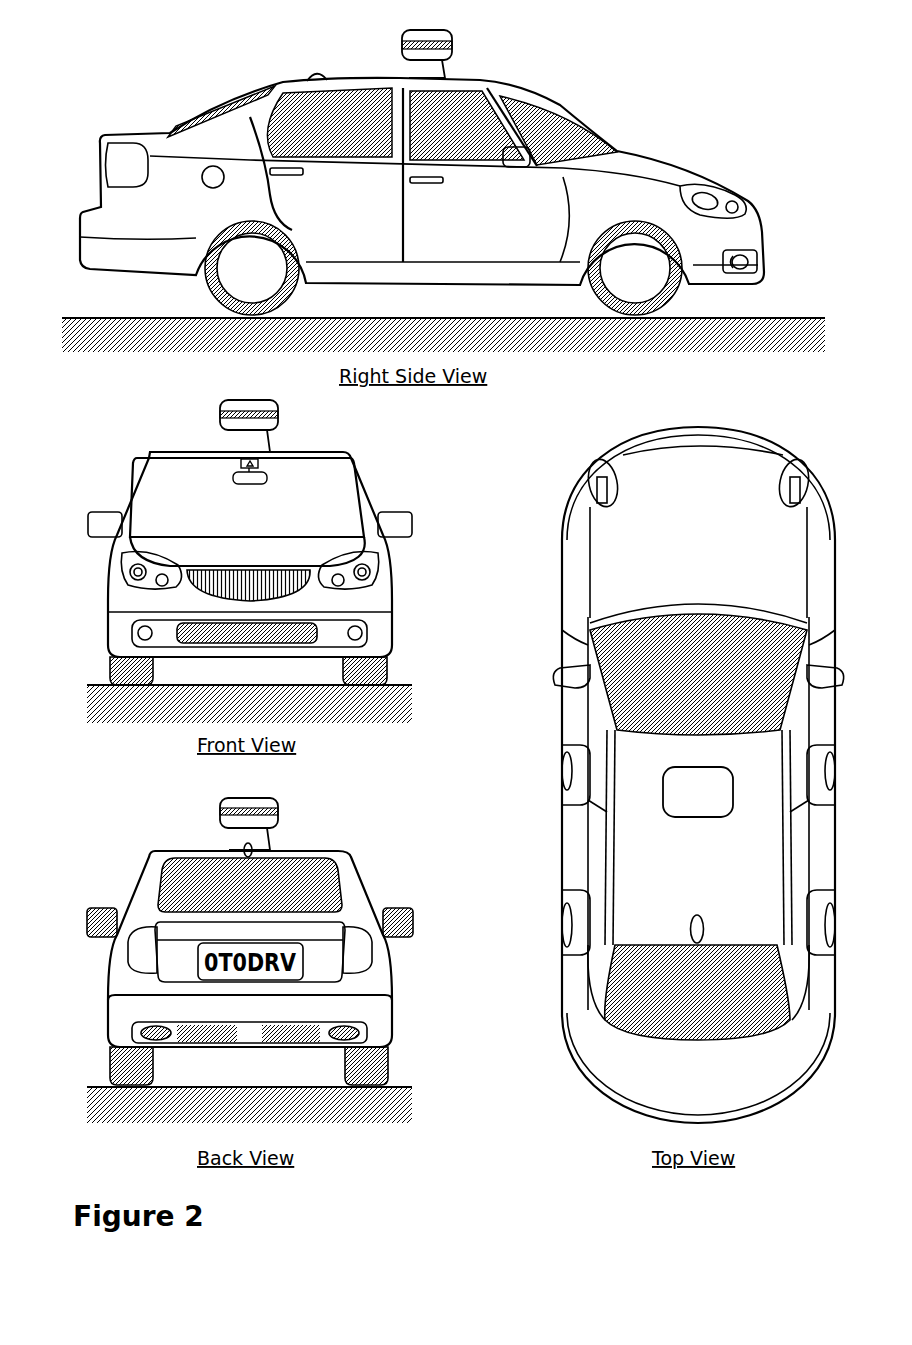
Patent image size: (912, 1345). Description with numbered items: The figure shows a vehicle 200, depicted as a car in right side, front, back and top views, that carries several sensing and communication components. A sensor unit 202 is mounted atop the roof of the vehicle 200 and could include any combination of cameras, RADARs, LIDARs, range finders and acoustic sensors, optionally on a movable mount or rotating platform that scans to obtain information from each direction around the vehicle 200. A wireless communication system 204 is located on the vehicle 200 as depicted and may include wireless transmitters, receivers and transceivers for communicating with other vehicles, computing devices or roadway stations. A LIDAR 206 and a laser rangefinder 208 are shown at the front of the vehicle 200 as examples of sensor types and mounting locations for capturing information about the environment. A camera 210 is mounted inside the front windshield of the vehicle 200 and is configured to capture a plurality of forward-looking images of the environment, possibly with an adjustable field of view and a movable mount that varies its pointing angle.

The vehicle 200 is at (72, 122).
The sensor unit 202 is at (453, 52).
The wireless communication system 204 is at (315, 72).
The LIDAR 206 is at (757, 258).
The laser rangefinder 208 is at (746, 212).
The camera 210 is at (258, 465).